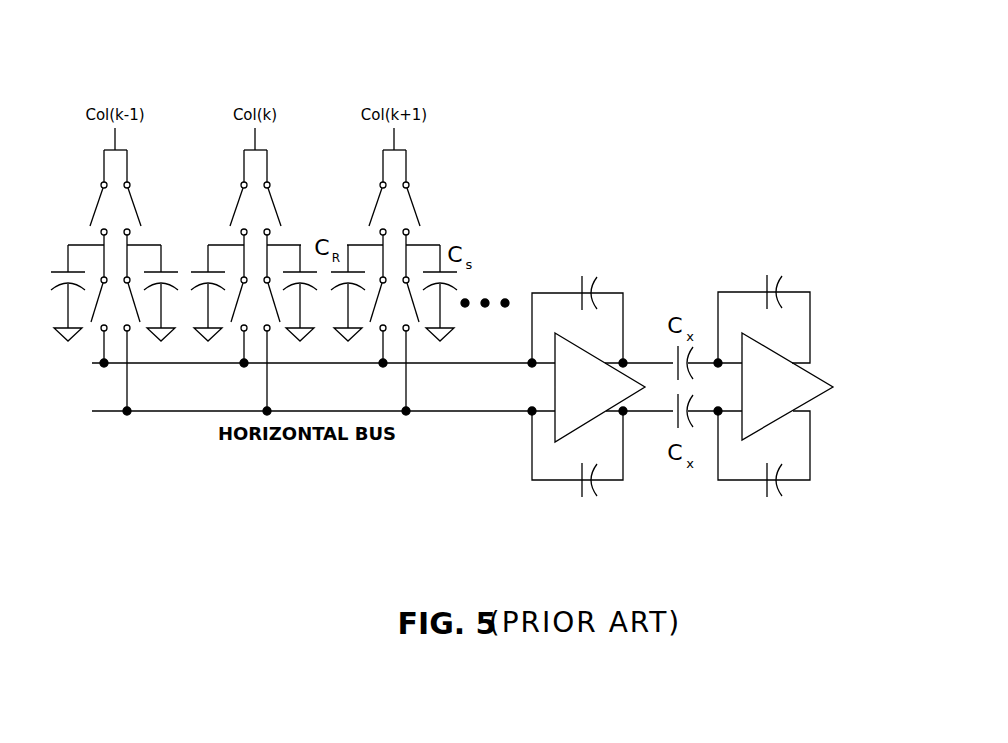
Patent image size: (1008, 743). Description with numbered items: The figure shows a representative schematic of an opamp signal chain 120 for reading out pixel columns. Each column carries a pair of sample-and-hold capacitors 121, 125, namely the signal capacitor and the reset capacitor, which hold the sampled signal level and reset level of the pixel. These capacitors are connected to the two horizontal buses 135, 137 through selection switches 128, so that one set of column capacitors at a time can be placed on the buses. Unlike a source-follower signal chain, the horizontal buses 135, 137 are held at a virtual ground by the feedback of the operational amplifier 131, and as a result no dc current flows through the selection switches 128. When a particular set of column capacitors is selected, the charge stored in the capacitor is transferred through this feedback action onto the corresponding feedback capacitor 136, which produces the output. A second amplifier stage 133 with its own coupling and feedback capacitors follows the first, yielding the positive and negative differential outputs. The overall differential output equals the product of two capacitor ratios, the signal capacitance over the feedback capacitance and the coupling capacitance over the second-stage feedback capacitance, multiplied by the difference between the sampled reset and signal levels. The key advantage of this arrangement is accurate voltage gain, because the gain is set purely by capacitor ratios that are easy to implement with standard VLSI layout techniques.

The opamp signal chain 120 is at (538, 112).
The sample-and-hold capacitor 121 is at (305, 271).
The sample-and-hold capacitor 125 is at (198, 271).
The selection switch 128 is at (93, 318).
The operational amplifier 131 is at (585, 350).
The second amplifier 133 is at (780, 350).
The horizontal bus 135 is at (155, 413).
The feedback capacitor 136 is at (578, 283).
The horizontal bus 137 is at (118, 365).